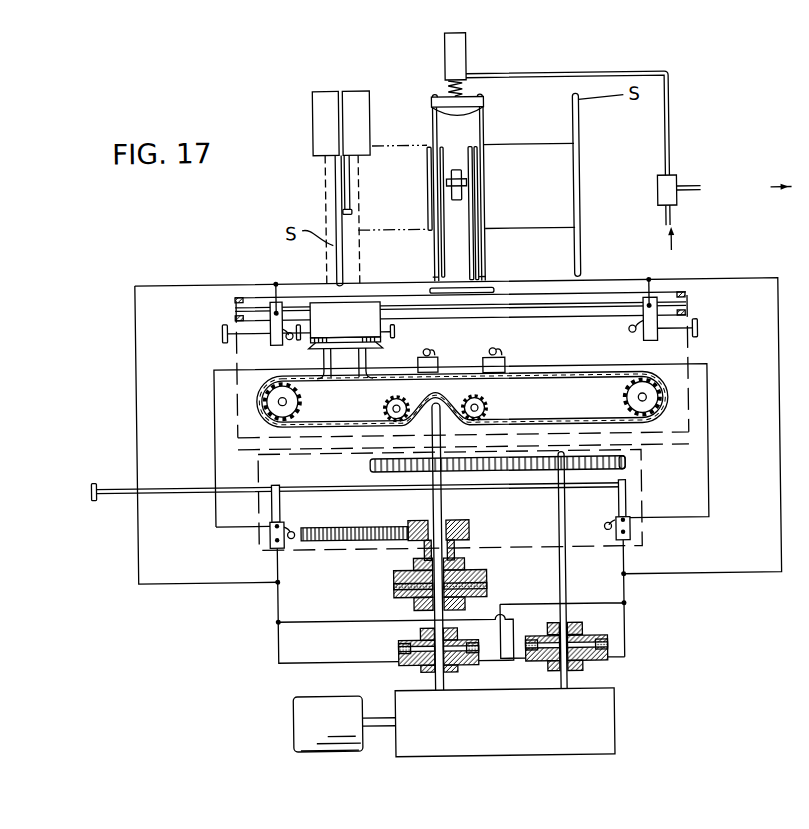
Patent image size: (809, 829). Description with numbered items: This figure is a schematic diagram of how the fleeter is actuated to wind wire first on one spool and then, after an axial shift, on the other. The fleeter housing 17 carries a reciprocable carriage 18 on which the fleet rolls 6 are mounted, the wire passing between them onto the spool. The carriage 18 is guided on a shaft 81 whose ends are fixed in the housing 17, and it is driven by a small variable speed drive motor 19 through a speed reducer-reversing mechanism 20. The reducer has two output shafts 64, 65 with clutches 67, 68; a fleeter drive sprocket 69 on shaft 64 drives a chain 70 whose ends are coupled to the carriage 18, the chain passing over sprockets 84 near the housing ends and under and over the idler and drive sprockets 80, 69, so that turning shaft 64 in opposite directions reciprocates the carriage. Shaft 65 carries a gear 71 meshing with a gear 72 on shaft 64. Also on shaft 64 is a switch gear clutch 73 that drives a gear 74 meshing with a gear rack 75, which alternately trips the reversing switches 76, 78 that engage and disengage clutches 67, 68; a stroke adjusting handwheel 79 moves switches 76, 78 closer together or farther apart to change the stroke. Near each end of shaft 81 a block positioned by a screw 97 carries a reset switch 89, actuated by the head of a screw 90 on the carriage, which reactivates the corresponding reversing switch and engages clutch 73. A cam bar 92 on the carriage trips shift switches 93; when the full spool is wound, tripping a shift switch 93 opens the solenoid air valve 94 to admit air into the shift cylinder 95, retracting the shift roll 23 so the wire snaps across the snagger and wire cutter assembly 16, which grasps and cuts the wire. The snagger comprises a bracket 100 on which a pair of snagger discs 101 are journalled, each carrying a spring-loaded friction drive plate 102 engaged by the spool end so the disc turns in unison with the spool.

The fleet rolls 6 is at (356, 95).
The shift cylinder 95 is at (450, 45).
The shift roll 23 is at (487, 103).
The friction drive plate 102 is at (433, 160).
The snagger and wire cutter assembly 16 is at (465, 184).
The snagger disc 101 is at (447, 248).
The bracket 100 is at (466, 260).
The solenoid air valve 94 is at (680, 204).
The fleeter housing 17 is at (242, 284).
The carriage 18 is at (317, 300).
The carriage guide shaft 81 is at (613, 304).
The screw 97 is at (224, 338).
The reset switch 89 is at (277, 343).
The screw 90 is at (300, 338).
The cam bar 92 is at (367, 351).
The shift switch 93 is at (441, 357).
The sprocket 84 is at (258, 396).
The idler sprocket 80 is at (384, 410).
The fleeter drive sprocket 69 is at (459, 398).
The chain 70 is at (637, 425).
The gear 72 is at (370, 466).
The gear 71 is at (628, 467).
The stroke adjusting handwheel 79 is at (93, 497).
The output shaft 64 is at (432, 503).
The gear 74 is at (468, 528).
The reversing switch 76 is at (269, 527).
The gear rack 75 is at (337, 540).
The reversing switch 78 is at (630, 527).
The switch gear clutch 73 is at (485, 578).
The clutch 67 is at (396, 659).
The clutch 68 is at (605, 660).
The output shaft 65 is at (569, 684).
The drive motor 19 is at (290, 724).
The speed reducer-reversing mechanism 20 is at (611, 735).